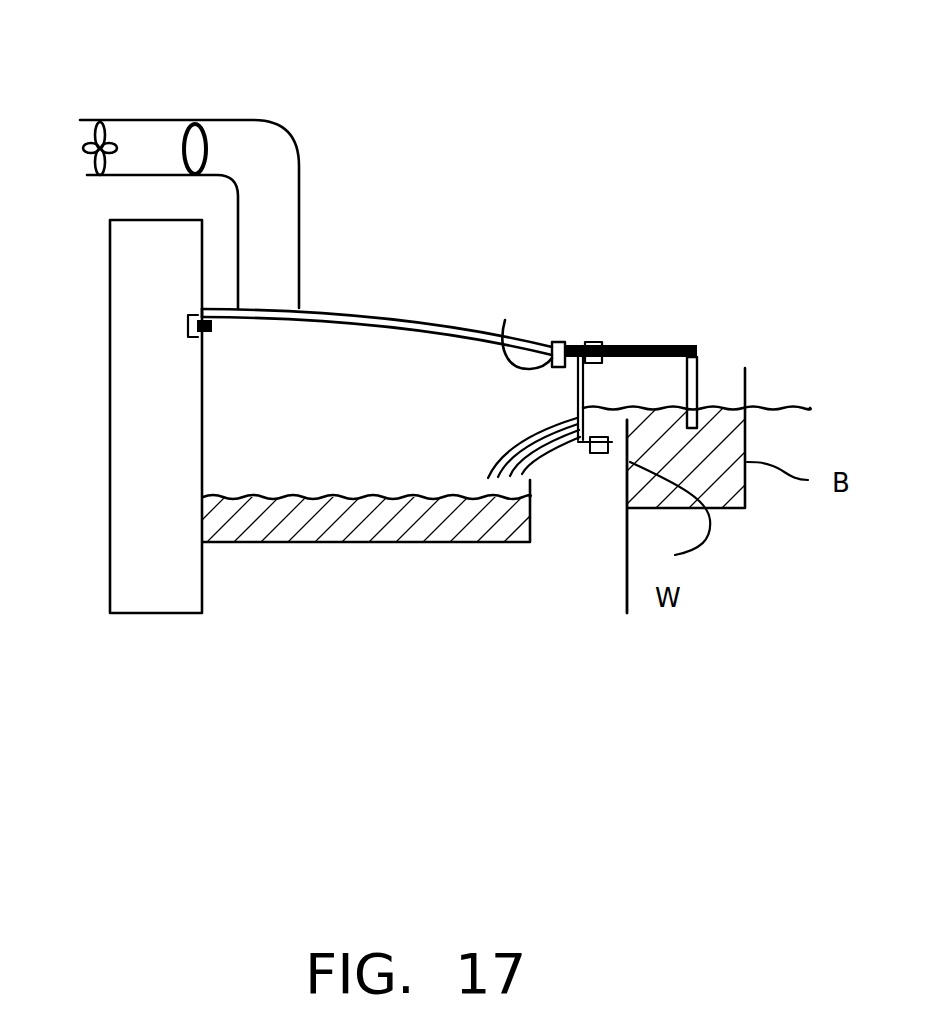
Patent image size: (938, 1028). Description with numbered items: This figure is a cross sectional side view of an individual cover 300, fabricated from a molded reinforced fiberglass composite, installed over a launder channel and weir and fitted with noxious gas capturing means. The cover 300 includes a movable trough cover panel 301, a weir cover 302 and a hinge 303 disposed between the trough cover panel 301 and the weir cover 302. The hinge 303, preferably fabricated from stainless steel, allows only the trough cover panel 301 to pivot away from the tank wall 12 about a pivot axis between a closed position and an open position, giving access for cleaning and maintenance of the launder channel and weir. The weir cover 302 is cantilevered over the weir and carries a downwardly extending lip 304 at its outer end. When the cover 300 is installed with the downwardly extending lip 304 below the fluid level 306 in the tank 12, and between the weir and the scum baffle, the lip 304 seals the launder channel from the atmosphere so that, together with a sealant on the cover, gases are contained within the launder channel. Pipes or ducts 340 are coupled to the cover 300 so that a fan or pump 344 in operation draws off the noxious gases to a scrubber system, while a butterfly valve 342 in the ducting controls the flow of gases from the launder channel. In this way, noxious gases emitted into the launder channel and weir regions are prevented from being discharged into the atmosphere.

The tank wall 12 is at (156, 416).
The individual cover 300 is at (490, 157).
The trough cover panel 301 is at (367, 310).
The weir cover 302 is at (663, 345).
The hinge 303 is at (505, 320).
The downwardly extending lip 304 is at (698, 377).
The fluid level 306 is at (630, 395).
The pipes or ducts 340 is at (298, 135).
The butterfly valve 342 is at (210, 133).
The fan or pump 344 is at (110, 120).